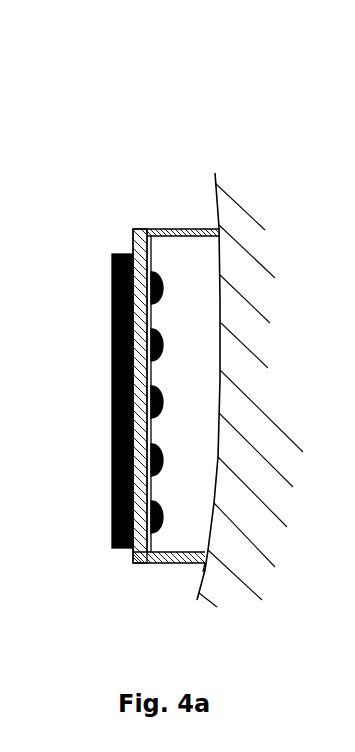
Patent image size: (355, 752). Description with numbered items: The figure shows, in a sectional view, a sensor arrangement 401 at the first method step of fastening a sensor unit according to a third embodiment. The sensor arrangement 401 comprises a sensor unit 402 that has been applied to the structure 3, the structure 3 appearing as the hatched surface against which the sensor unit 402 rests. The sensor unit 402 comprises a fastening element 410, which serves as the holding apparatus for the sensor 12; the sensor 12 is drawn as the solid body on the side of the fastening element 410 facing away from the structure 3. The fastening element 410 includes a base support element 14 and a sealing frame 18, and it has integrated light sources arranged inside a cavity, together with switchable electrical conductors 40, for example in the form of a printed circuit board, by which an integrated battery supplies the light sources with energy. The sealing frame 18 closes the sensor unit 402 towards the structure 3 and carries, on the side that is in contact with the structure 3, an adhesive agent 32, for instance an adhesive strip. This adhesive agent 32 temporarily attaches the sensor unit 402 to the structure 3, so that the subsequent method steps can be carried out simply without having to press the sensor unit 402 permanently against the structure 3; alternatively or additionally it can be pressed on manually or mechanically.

The sensor arrangement 401 is at (161, 353).
The sensor unit 402 is at (136, 394).
The fastening element 410 is at (91, 428).
The sensor 12 is at (110, 328).
The base support element 14 is at (142, 398).
The switchable electrical conductors 40 is at (145, 463).
The sealing frame 18 is at (165, 558).
The adhesive agent 32 is at (205, 568).
The structure 3 is at (232, 585).